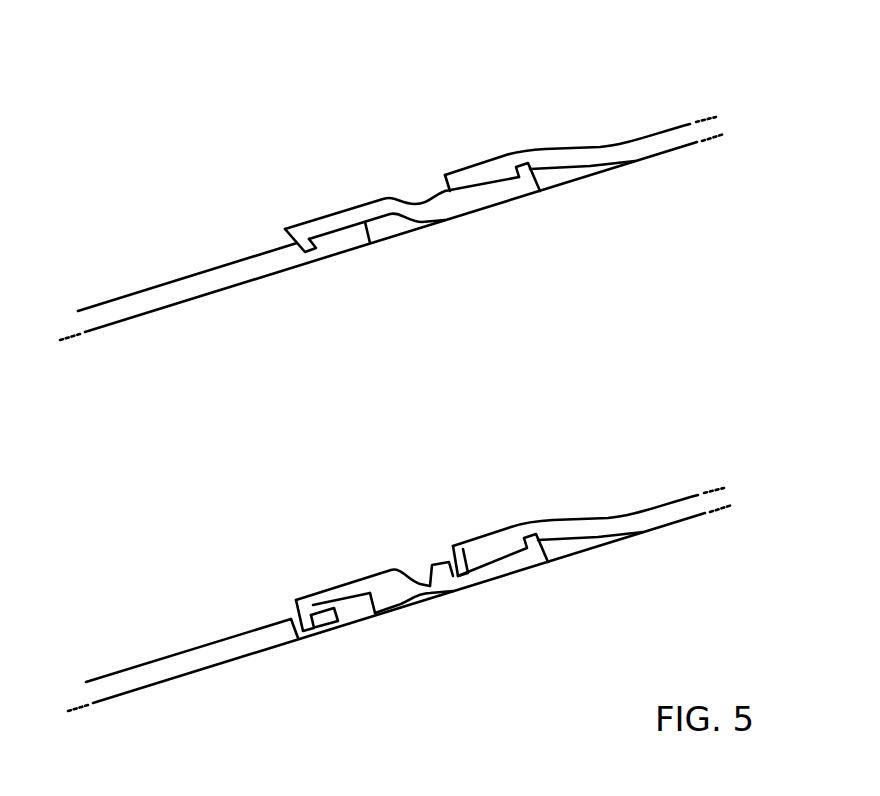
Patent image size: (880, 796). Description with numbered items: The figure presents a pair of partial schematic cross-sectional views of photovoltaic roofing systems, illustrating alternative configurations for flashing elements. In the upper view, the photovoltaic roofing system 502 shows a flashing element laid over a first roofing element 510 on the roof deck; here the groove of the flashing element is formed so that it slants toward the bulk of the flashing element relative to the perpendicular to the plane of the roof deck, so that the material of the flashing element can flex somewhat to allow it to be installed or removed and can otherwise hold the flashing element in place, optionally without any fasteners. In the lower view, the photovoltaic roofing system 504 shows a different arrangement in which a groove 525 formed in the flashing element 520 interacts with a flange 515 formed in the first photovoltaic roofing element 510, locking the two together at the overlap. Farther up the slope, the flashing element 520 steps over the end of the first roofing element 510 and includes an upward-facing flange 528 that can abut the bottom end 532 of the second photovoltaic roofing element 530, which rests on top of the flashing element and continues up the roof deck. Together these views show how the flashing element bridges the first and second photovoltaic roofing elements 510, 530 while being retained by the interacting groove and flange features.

The photovoltaic roofing system 502 is at (704, 78).
The photovoltaic roofing system 504 is at (697, 440).
The first panel 510 is at (188, 584).
The flange 515 is at (310, 614).
The flashing element 520 is at (348, 520).
The groove 525 is at (330, 605).
The upward-facing flange 528 is at (418, 556).
The third panel 530 is at (561, 484).
The bottom end 532 is at (464, 545).